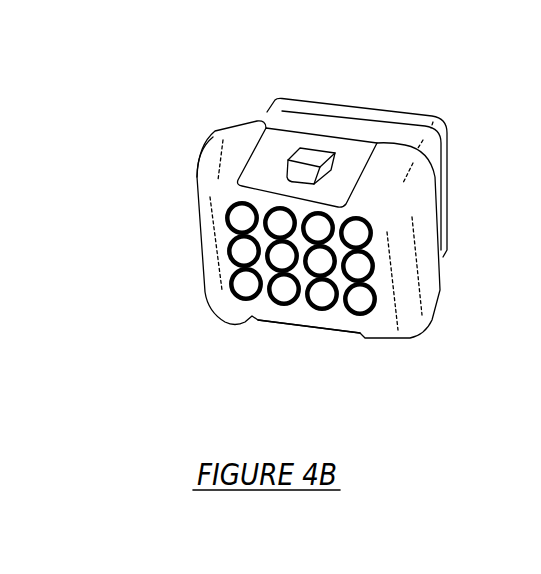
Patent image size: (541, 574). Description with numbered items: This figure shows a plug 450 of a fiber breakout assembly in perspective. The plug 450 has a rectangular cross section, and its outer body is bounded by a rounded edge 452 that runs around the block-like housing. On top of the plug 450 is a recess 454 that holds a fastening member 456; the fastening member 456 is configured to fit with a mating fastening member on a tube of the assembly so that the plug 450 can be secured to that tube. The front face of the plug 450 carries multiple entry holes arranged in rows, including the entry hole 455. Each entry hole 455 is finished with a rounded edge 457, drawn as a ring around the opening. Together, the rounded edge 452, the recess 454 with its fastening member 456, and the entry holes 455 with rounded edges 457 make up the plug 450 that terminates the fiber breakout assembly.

The plug 450 is at (373, 72).
The rounded edge 452 is at (393, 200).
The recess 454 is at (273, 163).
The entry hole 455 is at (243, 287).
The fastening member 456 is at (300, 148).
The rounded edge 457 is at (248, 300).